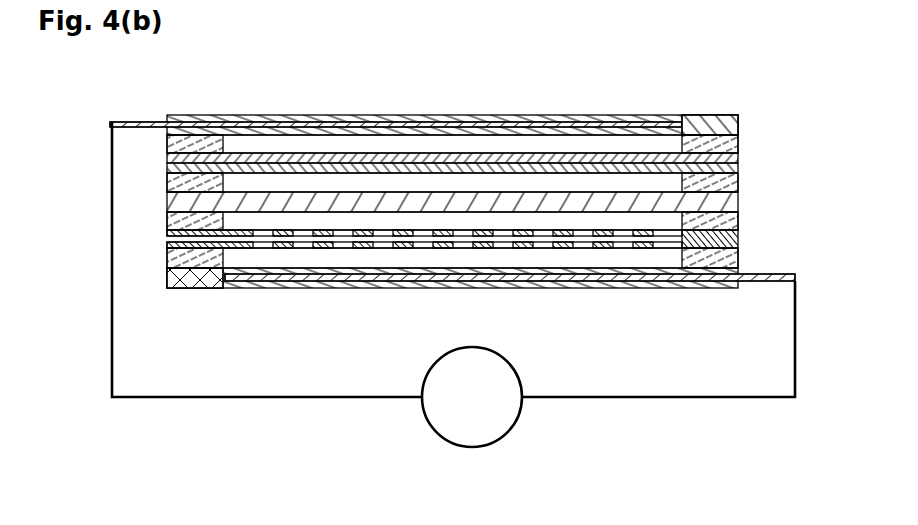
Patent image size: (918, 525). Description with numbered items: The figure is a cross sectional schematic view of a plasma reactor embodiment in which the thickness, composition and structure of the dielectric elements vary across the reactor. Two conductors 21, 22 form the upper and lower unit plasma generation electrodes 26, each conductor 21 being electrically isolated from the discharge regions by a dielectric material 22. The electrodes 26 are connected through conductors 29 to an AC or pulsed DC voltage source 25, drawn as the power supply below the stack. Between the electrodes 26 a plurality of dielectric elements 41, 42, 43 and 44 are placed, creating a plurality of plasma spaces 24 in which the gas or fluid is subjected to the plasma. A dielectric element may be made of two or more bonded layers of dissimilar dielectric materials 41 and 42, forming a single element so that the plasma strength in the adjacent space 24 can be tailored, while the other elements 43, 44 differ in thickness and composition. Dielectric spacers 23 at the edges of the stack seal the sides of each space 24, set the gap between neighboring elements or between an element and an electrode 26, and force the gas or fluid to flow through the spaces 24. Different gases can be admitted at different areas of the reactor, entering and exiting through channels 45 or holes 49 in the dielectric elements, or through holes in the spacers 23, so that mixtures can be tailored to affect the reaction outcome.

The conductor 21 is at (137, 123).
The dielectric material 22 is at (722, 133).
The dielectric spacer 23 is at (733, 148).
The plasma space 24 is at (258, 257).
The AC or pulsed DC voltage source 25 is at (507, 407).
The unit plasma generation electrode 26 is at (403, 115).
The conductor 29 is at (213, 398).
The dielectric element 41 is at (722, 167).
The dielectric element 42 is at (180, 158).
The dielectric element 43 is at (720, 202).
The dielectric element 44 is at (738, 235).
The channel 45 is at (182, 238).
The hole 49 is at (258, 229).